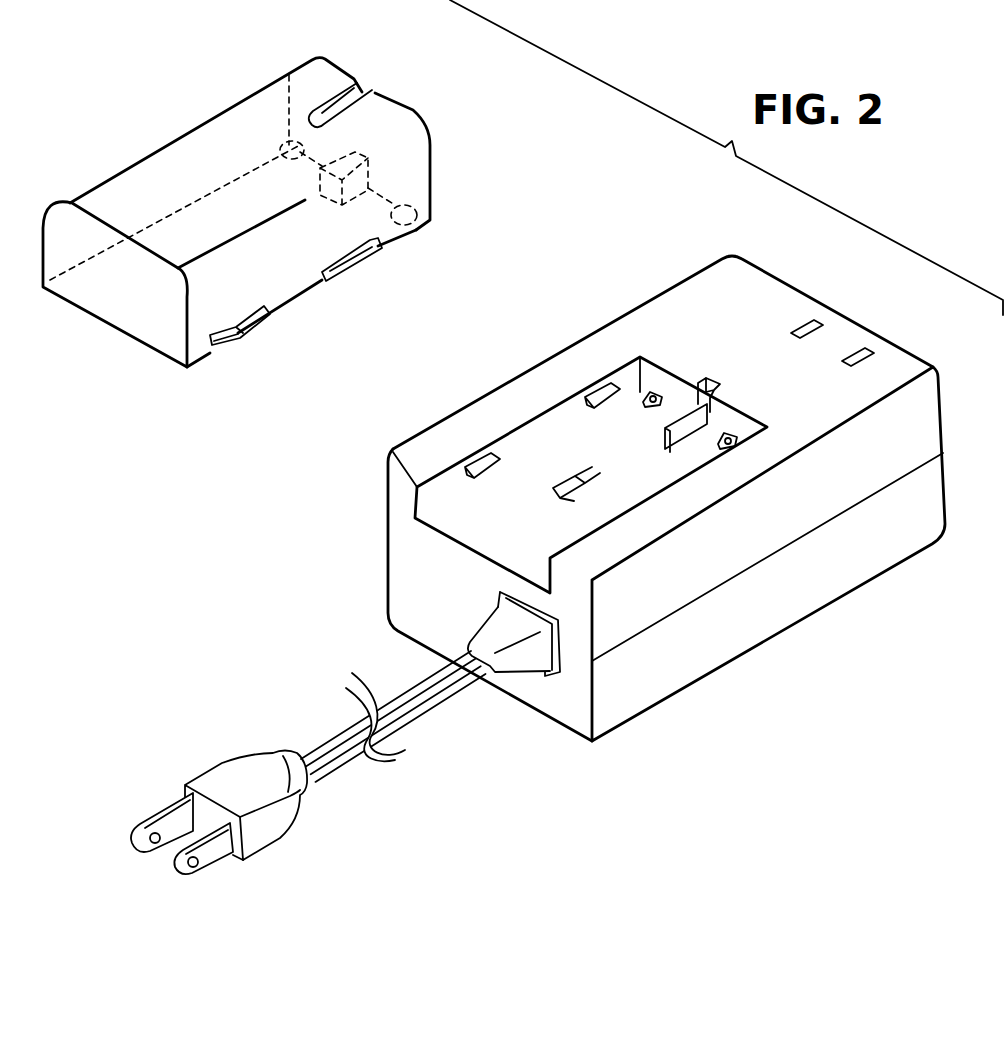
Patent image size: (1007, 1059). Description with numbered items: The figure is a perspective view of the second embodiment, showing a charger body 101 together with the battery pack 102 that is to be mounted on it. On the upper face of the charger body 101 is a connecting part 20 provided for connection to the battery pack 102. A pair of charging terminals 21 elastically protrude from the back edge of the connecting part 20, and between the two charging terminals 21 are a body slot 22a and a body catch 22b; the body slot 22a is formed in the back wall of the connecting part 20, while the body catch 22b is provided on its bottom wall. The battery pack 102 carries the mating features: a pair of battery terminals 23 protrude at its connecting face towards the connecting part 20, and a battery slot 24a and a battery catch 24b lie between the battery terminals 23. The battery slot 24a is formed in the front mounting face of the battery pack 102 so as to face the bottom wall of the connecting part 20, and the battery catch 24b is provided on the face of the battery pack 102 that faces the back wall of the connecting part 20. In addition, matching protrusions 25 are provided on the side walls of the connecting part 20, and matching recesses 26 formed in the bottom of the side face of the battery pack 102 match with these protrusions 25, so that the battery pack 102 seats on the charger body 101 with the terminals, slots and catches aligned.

The charger body 101 is at (787, 630).
The battery pack 102 is at (130, 342).
The connecting part 20 is at (447, 520).
The charging terminals 21 is at (652, 392).
The body slot 22a is at (703, 387).
The body catch 22b is at (672, 422).
The battery terminals 23 is at (288, 148).
The battery slot 24a is at (366, 178).
The battery catch 24b is at (367, 141).
The matching protrusions 25 is at (590, 390).
The matching recesses 26 is at (358, 266).